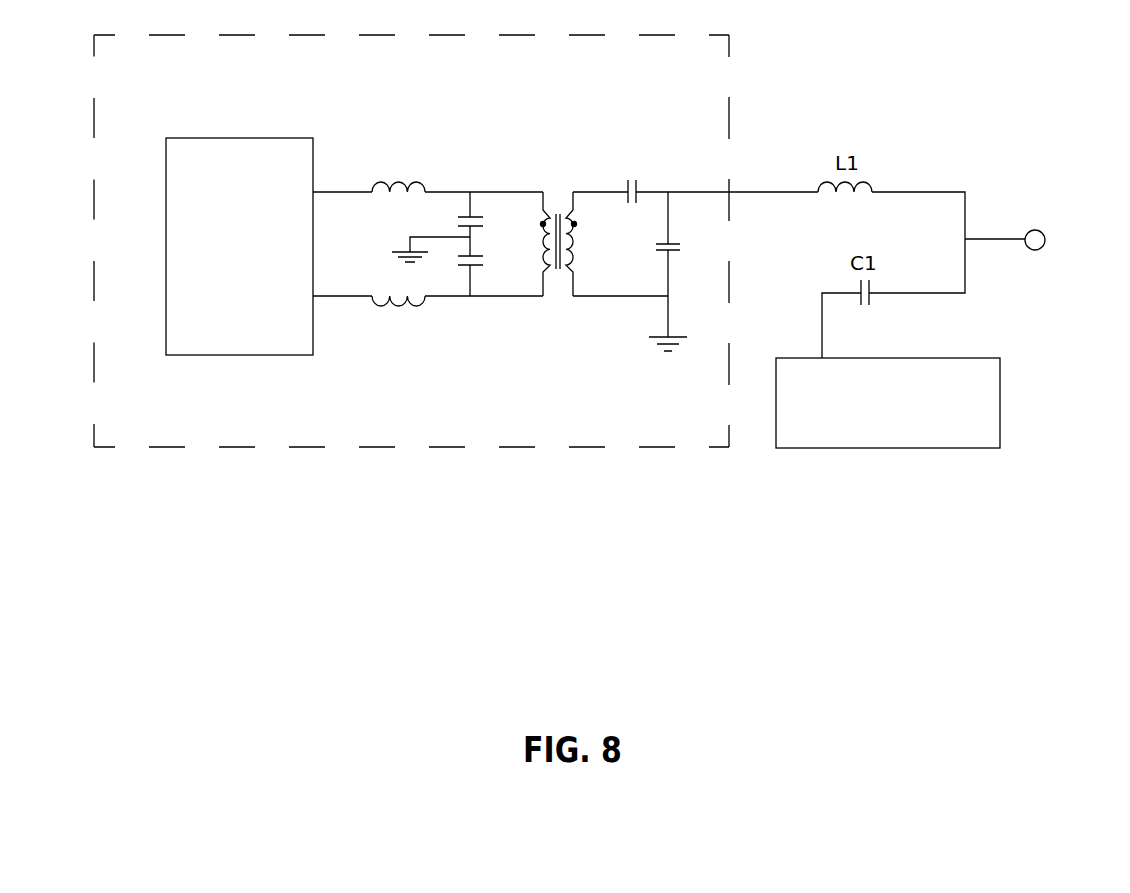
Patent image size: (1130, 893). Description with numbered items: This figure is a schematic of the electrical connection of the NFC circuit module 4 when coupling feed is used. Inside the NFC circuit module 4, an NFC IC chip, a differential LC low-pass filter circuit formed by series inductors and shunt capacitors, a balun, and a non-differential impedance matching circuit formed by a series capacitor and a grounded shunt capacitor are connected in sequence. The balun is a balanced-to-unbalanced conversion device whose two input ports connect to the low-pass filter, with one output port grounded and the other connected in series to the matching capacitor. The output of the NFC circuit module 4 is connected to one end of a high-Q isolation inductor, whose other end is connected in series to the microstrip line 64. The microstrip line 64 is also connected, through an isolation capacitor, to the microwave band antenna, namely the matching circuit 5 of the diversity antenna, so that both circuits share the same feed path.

The NFC circuit module 4 is at (468, 400).
The matching circuit of the diversity antenna 5 is at (884, 433).
The microstrip line 64 is at (992, 238).